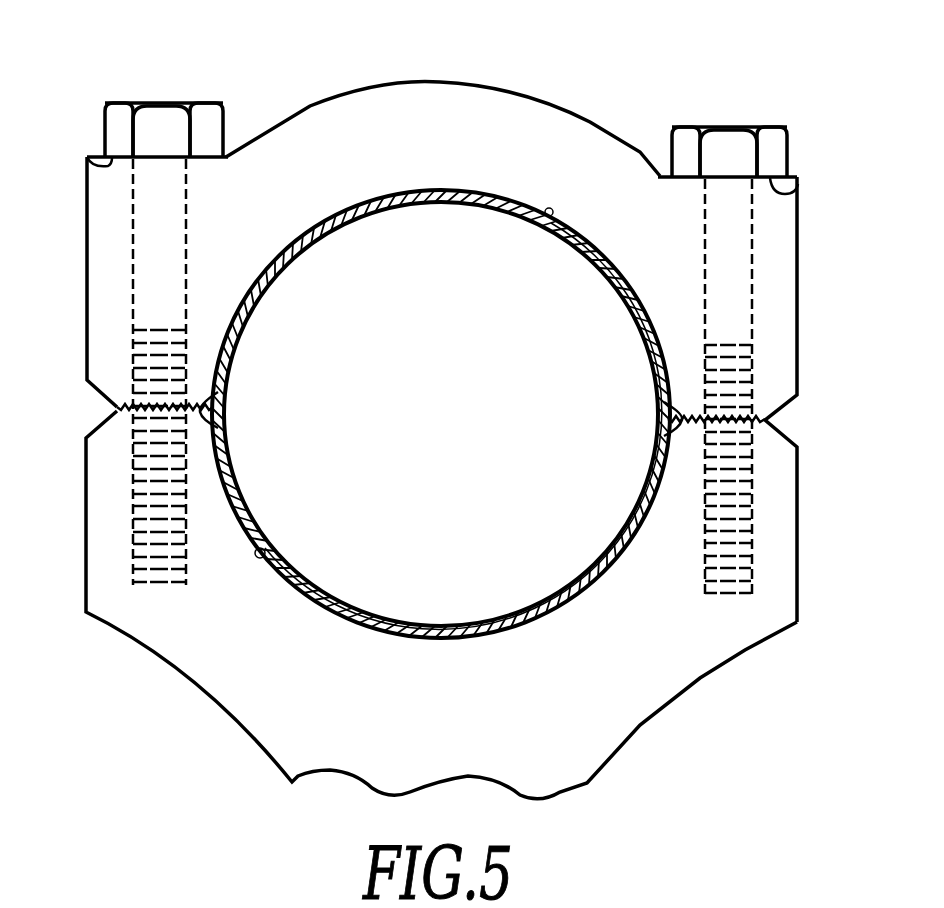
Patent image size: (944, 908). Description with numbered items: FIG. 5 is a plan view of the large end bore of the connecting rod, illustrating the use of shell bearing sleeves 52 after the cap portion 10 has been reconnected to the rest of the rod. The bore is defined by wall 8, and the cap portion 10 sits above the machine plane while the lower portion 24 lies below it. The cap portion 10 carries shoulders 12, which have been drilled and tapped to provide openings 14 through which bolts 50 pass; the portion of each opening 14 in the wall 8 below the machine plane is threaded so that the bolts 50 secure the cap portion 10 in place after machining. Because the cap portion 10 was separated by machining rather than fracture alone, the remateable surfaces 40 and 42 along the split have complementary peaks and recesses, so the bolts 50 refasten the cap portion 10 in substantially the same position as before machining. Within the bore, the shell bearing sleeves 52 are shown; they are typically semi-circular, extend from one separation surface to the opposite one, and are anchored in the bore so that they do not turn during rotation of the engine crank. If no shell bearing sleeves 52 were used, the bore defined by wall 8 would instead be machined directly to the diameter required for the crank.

The wall 8 is at (545, 212).
The cap portion 10 is at (508, 100).
The shoulders 12 is at (88, 166).
The openings 14 is at (755, 258).
The lower portion 24 is at (620, 706).
The remateable surface 40 is at (222, 394).
The remateable surface 42 is at (224, 425).
The bolts 50 is at (152, 103).
The shell bearing sleeves 52 is at (330, 226).